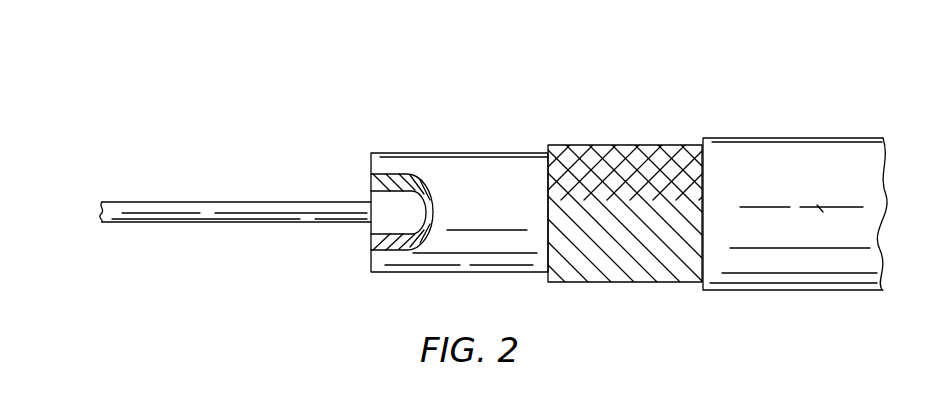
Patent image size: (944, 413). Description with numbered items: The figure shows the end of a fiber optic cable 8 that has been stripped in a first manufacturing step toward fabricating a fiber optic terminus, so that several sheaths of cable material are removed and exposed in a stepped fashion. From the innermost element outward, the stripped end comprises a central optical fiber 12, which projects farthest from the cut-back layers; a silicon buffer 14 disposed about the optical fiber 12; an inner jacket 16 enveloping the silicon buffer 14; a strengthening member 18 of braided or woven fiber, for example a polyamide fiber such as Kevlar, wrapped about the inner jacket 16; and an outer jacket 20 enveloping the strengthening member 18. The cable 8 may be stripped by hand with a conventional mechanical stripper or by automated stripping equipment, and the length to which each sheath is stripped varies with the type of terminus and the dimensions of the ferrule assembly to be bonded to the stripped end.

The fiber optic cable 8 is at (818, 98).
The optical fiber 12 is at (225, 208).
The silicon buffer 14 is at (380, 195).
The inner jacket 16 is at (442, 158).
The strengthening member 18 is at (602, 152).
The outer jacket 20 is at (735, 147).